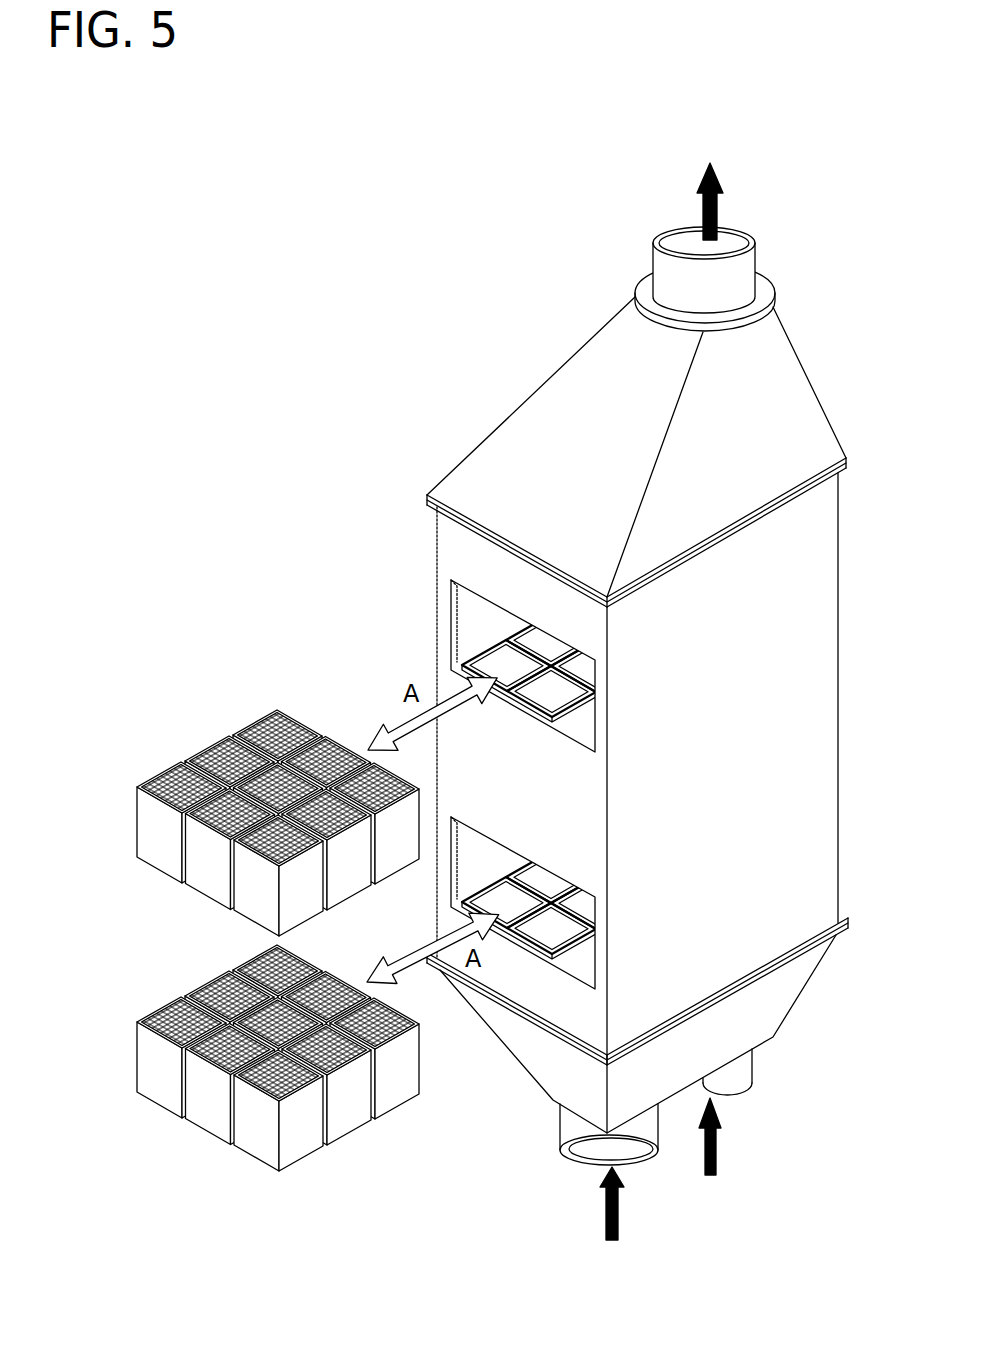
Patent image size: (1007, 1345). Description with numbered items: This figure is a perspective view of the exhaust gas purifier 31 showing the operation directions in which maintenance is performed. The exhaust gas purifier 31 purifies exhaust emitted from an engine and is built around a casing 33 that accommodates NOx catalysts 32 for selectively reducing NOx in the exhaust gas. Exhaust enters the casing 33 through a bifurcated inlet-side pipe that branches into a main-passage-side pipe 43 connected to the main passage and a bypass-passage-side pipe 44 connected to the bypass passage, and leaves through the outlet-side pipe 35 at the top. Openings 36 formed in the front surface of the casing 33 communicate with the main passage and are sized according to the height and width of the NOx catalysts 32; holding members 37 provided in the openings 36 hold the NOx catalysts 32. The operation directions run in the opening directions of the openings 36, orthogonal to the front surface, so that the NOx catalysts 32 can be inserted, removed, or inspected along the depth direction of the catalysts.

The exhaust gas purifier 31 is at (307, 270).
The NOx catalyst 32 is at (122, 778).
The casing 33 is at (440, 438).
The outlet-side pipe 35 is at (662, 252).
The openings 36 is at (450, 645).
The holding members 37 is at (590, 672).
The main-passage-side pipe 43 is at (562, 1130).
The bypass-passage-side pipe 44 is at (752, 1073).